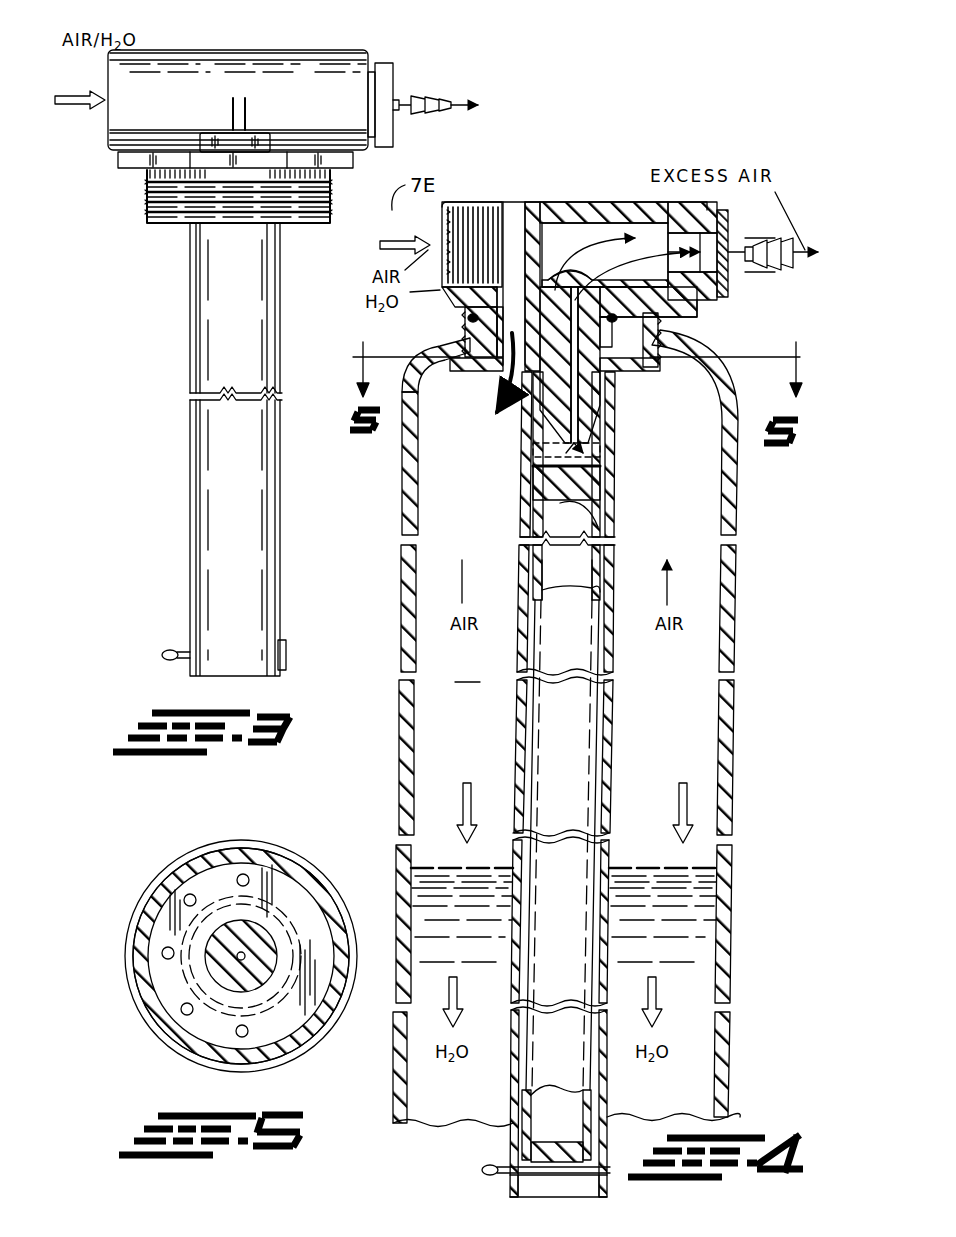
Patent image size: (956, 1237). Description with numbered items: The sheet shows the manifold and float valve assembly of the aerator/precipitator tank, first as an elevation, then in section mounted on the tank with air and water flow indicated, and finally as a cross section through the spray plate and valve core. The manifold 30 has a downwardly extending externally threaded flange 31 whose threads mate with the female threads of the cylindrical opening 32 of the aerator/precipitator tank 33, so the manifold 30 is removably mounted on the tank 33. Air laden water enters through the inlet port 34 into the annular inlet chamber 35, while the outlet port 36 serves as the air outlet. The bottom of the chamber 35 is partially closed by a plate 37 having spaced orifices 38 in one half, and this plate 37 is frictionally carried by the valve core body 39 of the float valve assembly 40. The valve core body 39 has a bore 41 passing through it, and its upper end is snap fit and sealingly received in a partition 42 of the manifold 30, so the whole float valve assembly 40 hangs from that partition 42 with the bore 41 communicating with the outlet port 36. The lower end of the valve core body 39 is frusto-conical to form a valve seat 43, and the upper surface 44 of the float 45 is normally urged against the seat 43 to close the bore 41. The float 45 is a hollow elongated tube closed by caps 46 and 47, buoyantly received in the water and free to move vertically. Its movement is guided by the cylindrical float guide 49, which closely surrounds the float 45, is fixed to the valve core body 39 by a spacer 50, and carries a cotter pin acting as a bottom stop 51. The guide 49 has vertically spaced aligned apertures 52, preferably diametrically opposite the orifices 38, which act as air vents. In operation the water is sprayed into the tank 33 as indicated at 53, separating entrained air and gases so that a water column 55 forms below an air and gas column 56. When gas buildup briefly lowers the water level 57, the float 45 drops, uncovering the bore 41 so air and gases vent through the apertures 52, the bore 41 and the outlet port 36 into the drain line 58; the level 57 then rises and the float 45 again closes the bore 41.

In FIG. 3, the manifold 30 is at (260, 62).
In FIG. 4, the manifold 30 is at (585, 238).
In FIG. 3, the externally threaded flange 31 is at (147, 194).
In FIG. 4, the externally threaded flange 31 is at (472, 318).
In FIG. 4, the cylindrical opening 32 is at (466, 342).
In FIG. 4, the aerator/precipitator tank 33 is at (405, 500).
In FIG. 4, the inlet port 34 is at (458, 203).
In FIG. 4, the annular inlet chamber 35 is at (513, 205).
In FIG. 4, the outlet port 36 is at (610, 243).
In FIG. 4, the plate 37 is at (645, 385).
In FIG. 5, the plate 37 is at (292, 1025).
In FIG. 4, the spaced orifices 38 is at (495, 368).
In FIG. 5, the spaced orifices 38 is at (162, 950).
In FIG. 4, the valve core body 39 is at (548, 422).
In FIG. 5, the valve core body 39 is at (215, 975).
In FIG. 4, the float valve assembly 40 is at (592, 452).
In FIG. 4, the bore 41 is at (605, 425).
In FIG. 5, the bore 41 is at (255, 940).
In FIG. 4, the partition 42 is at (633, 292).
In FIG. 4, the valve seat 43 is at (545, 450).
In FIG. 4, the upper surface of float 44 is at (535, 482).
In FIG. 4, the float 45 is at (533, 572).
In FIG. 4, the cap 46 is at (600, 522).
In FIG. 4, the cap 47 is at (592, 1152).
In FIG. 3, the cylindrical float guide 49 is at (190, 478).
In FIG. 4, the cylindrical float guide 49 is at (608, 880).
In FIG. 5, the cylindrical float guide 49 is at (285, 905).
In FIG. 4, the spacer 50 is at (605, 393).
In FIG. 3, the bottom stop 51 is at (172, 650).
In FIG. 4, the bottom stop 51 is at (550, 1174).
In FIG. 4, the aligned apertures 52 is at (600, 588).
In FIG. 4, the spray 53 is at (492, 412).
In FIG. 4, the water column 55 is at (440, 915).
In FIG. 4, the air and gas column 56 is at (467, 671).
In FIG. 4, the water level 57 is at (430, 866).
In FIG. 4, the drain line 58 is at (806, 276).